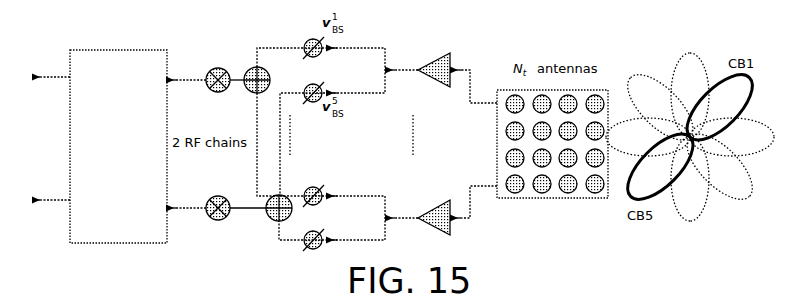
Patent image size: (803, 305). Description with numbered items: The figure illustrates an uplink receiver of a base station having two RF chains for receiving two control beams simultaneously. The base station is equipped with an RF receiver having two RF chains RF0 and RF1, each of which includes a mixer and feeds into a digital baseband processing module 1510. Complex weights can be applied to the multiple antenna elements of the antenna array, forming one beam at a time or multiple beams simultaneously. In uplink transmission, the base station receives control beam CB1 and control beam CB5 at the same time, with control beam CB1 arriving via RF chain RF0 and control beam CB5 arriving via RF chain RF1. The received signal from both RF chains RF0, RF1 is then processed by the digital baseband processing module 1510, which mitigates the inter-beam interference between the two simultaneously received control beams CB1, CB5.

The digital baseband processing module 1510 is at (124, 50).
The control beam CB1 is at (219, 69).
The control beam CB5 is at (218, 218).
The RF chain RF0 is at (205, 100).
The RF chain RF1 is at (216, 189).